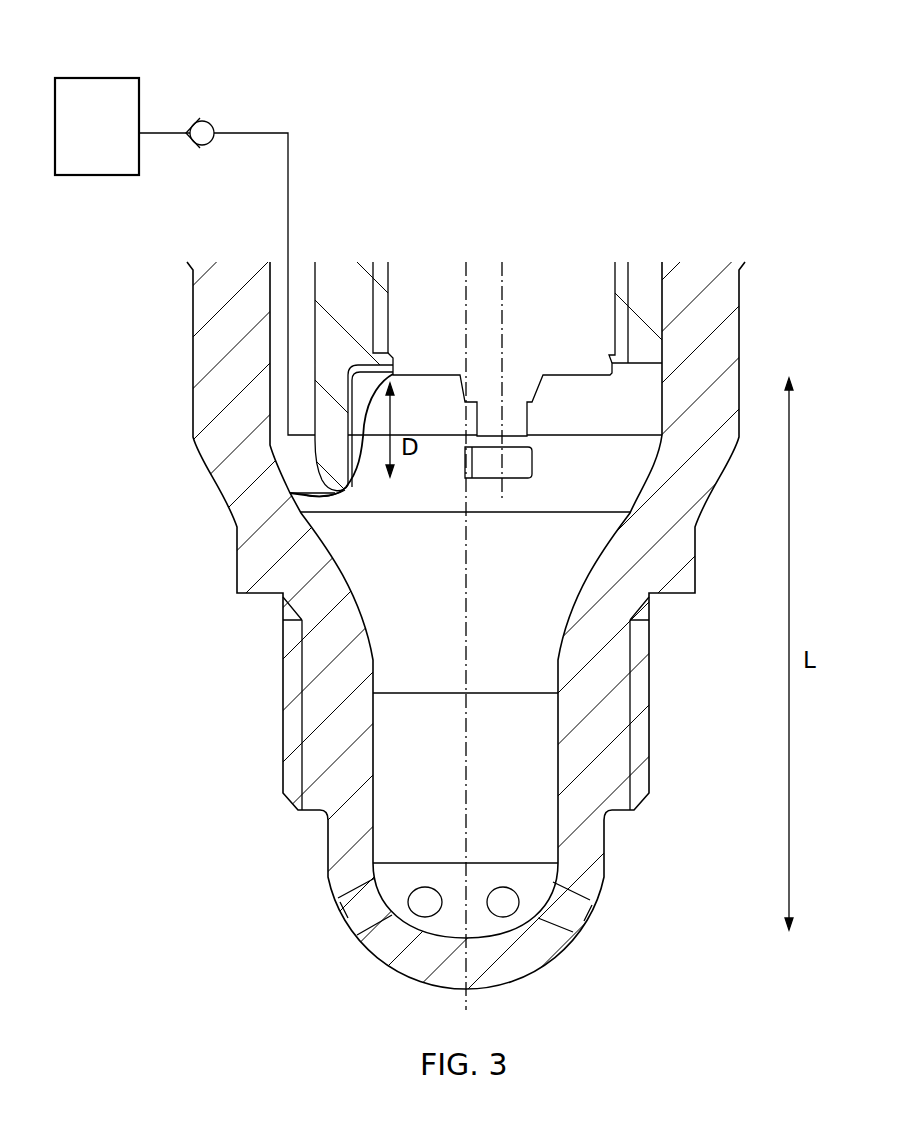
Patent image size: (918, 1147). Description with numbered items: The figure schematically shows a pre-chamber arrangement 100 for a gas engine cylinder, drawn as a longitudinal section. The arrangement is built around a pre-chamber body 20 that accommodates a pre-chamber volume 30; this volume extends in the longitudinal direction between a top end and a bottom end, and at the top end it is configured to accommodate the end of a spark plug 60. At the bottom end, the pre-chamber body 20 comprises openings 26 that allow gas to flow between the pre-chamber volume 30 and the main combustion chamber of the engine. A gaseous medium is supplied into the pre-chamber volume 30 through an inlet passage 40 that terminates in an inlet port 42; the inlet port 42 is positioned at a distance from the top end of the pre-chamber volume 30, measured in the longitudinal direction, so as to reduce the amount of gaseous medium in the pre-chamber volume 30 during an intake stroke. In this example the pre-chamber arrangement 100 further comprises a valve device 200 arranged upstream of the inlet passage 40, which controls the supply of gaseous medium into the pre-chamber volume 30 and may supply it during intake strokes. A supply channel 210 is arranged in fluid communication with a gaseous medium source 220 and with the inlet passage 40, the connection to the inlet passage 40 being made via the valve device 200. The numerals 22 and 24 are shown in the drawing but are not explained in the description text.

The pre-chamber arrangement 100 is at (540, 120).
The pre-chamber body 20 is at (695, 564).
The nozzle holder 22 is at (632, 382).
The sac volume 24 is at (447, 927).
The openings 26 is at (357, 915).
The pre-chamber volume 30 is at (543, 647).
The inlet passage 40 is at (292, 412).
The inlet port 42 is at (321, 499).
The spark plug 60 is at (533, 463).
The valve device 200 is at (207, 121).
The supply channel 210 is at (157, 133).
The gaseous medium source 220 is at (97, 126).